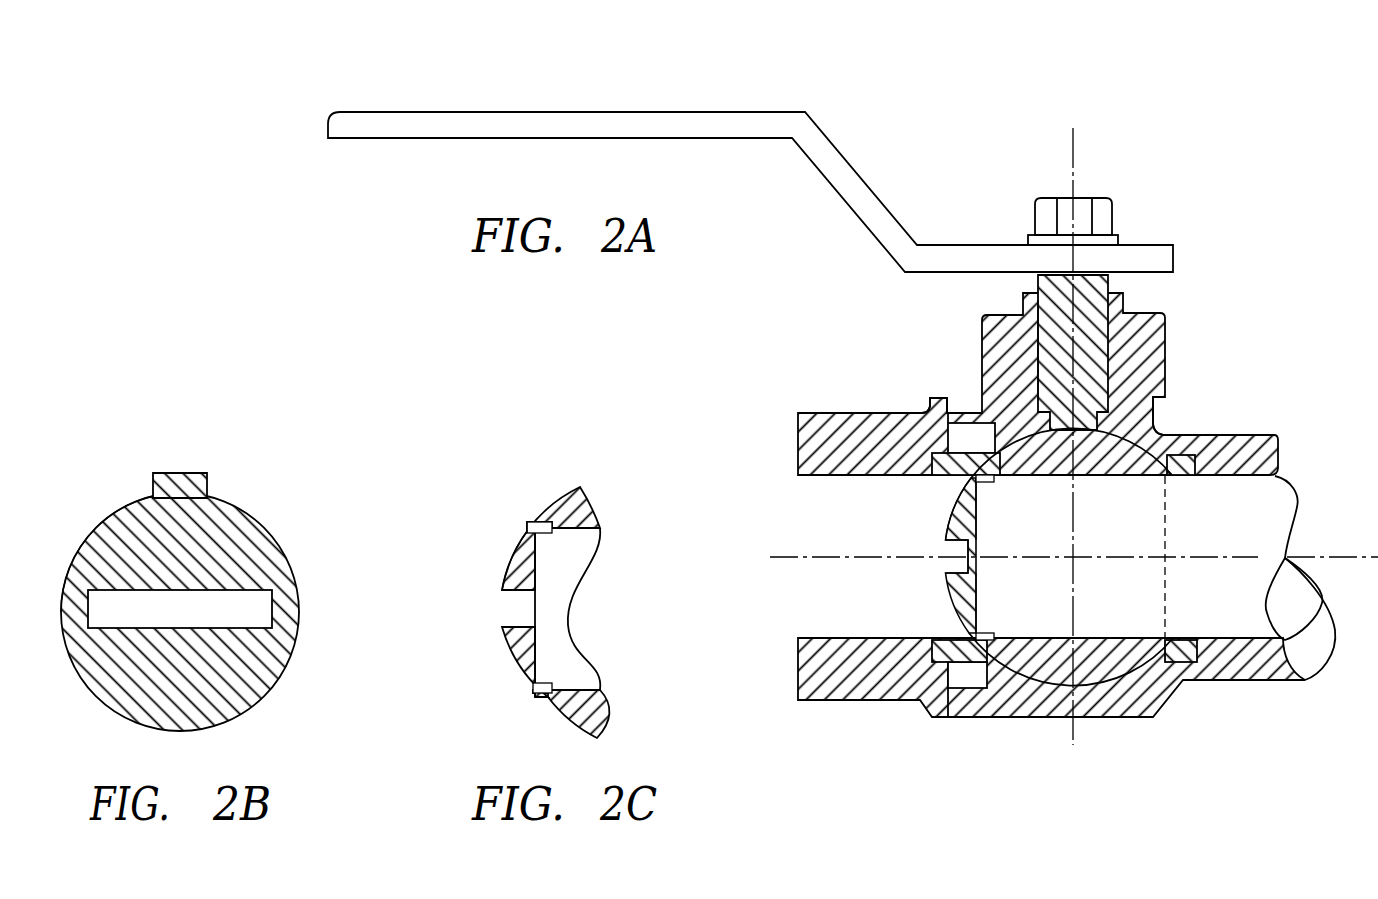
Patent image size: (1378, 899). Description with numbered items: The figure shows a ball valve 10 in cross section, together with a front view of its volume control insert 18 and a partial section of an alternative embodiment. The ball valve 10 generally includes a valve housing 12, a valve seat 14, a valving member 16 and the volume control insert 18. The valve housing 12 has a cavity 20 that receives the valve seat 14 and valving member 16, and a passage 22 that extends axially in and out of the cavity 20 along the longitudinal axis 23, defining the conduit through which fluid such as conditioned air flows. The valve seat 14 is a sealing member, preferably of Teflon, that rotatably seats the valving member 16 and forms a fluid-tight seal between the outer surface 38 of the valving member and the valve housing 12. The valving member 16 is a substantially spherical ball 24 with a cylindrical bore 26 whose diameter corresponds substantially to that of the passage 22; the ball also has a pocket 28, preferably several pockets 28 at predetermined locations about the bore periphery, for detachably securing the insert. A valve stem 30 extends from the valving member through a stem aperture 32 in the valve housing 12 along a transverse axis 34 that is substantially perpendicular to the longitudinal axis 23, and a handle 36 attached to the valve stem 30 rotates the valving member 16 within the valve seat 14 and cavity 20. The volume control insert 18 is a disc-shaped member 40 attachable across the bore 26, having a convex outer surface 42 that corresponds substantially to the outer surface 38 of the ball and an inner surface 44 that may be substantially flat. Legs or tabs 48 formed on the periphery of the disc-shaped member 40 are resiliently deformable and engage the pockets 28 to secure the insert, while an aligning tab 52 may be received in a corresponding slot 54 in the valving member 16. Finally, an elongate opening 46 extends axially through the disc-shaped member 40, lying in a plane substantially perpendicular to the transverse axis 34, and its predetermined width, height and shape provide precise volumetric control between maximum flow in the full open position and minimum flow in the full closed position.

In FIG. 2A, the ball valve 10 is at (1077, 505).
In FIG. 2A, the valve housing 12 is at (1251, 434).
In FIG. 2A, the valve seat 14 is at (1187, 681).
In FIG. 2A, the valving member 16 is at (1066, 692).
In FIG. 2C, the valving member 16 is at (585, 482).
In FIG. 2A, the volume control insert 18 is at (948, 613).
In FIG. 2B, the volume control insert 18 is at (306, 524).
In FIG. 2C, the volume control insert 18 is at (499, 581).
In FIG. 2A, the cavity 20 is at (931, 405).
In FIG. 2A, the passage 22 is at (865, 556).
In FIG. 2A, the longitudinal axis 23 is at (1290, 557).
In FIG. 2A, the spherical ball 24 is at (1097, 720).
In FIG. 2A, the cylindrical bore 26 is at (1109, 556).
In FIG. 2C, the cylindrical bore 26 is at (574, 609).
In FIG. 2A, the pocket 28 is at (990, 665).
In FIG. 2C, the pocket 28 is at (545, 698).
In FIG. 2A, the valve stem 30 is at (1087, 357).
In FIG. 2A, the stem aperture 32 is at (1042, 330).
In FIG. 2A, the transverse axis 34 is at (1078, 160).
In FIG. 2A, the handle 36 is at (633, 112).
In FIG. 2A, the outer surface 38 is at (1153, 418).
In FIG. 2A, the disc-shaped member 40 is at (953, 585).
In FIG. 2B, the disc-shaped member 40 is at (105, 530).
In FIG. 2A, the convex outer surface 42 is at (947, 500).
In FIG. 2C, the convex outer surface 42 is at (505, 573).
In FIG. 2A, the inner surface 44 is at (977, 610).
In FIG. 2C, the inner surface 44 is at (535, 667).
In FIG. 2A, the elongate slot or opening 46 is at (955, 545).
In FIG. 2B, the elongate slot or opening 46 is at (215, 608).
In FIG. 2C, the elongate slot or opening 46 is at (499, 613).
In FIG. 2A, the legs or tabs 48 is at (990, 465).
In FIG. 2C, the legs or tabs 48 is at (548, 533).
In FIG. 2B, the aligning tab 52 is at (178, 473).
In FIG. 2C, the aligning tab 52 is at (540, 522).
In FIG. 2C, the slot 54 is at (527, 528).